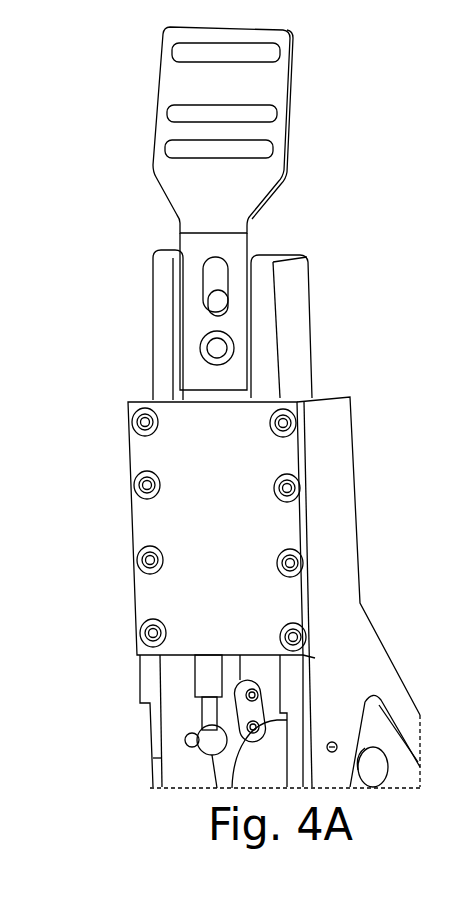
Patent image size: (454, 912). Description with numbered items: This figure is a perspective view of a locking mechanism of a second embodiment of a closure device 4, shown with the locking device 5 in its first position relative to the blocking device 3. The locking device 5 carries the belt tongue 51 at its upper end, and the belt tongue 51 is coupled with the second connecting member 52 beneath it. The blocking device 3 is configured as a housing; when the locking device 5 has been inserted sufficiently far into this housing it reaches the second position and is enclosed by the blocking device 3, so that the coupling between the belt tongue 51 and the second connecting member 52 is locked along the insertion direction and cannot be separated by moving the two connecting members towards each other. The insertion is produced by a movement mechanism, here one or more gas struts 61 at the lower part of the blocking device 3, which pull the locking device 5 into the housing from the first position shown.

The belt tongue 51 is at (263, 82).
The locking device 5 is at (253, 292).
The second connecting member 52 is at (287, 295).
The blocking device 3 is at (330, 497).
The gas strut 61 is at (177, 712).
The closure device 4 is at (299, 741).